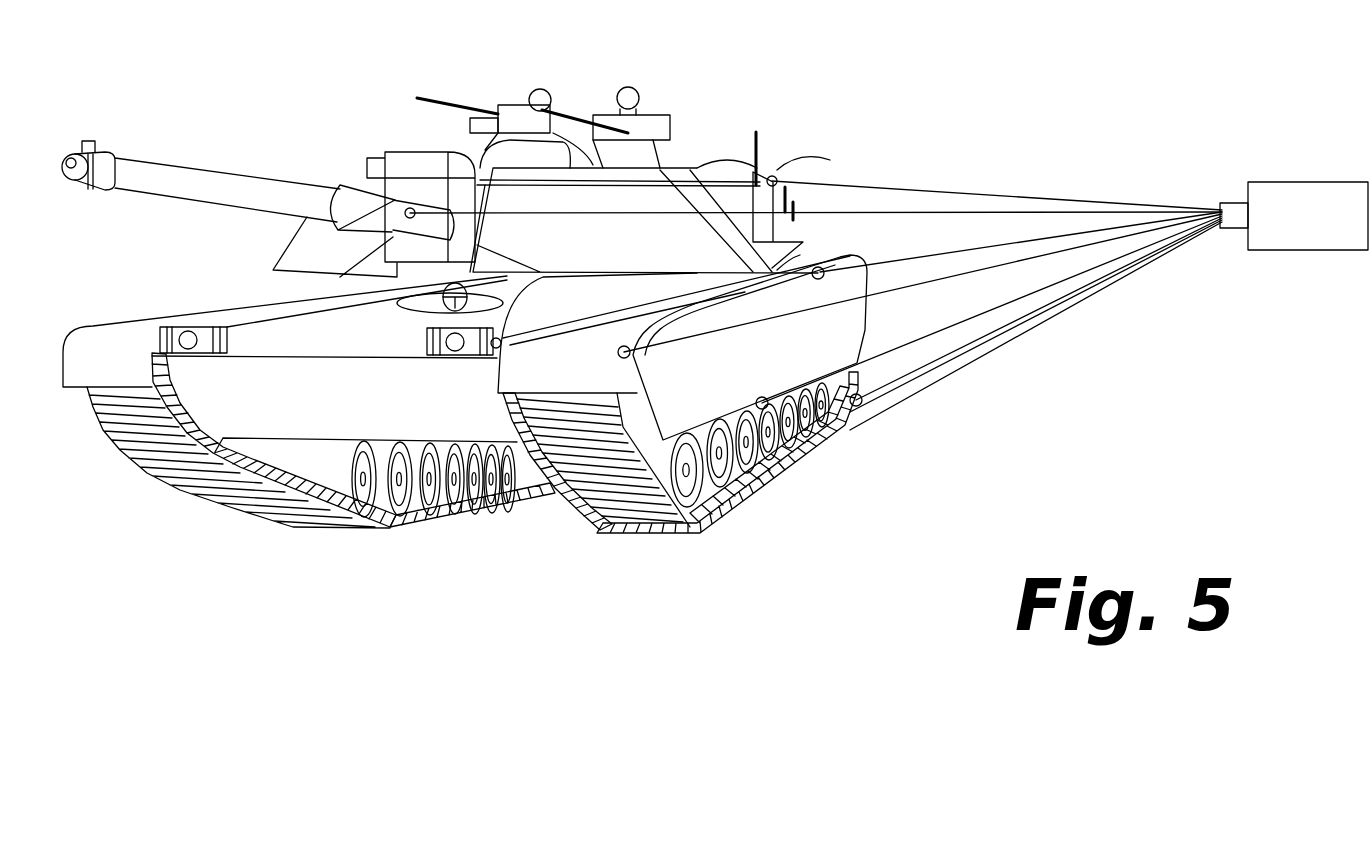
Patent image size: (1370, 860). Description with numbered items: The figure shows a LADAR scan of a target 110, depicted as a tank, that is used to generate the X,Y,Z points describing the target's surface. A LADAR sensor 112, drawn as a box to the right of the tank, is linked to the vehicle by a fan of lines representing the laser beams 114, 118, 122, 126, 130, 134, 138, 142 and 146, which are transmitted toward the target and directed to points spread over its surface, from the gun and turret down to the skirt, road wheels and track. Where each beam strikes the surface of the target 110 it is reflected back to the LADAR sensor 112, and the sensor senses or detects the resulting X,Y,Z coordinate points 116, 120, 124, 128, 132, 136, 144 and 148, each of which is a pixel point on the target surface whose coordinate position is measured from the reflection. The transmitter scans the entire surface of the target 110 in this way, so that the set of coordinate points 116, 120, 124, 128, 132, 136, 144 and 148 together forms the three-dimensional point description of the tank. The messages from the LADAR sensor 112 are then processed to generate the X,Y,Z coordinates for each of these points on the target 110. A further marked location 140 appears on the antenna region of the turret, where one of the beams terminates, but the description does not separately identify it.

The target 110 is at (662, 103).
The LADAR sensor 112 is at (1296, 182).
The laser beam 114 is at (1000, 324).
The X,Y,Z coordinate point 116 is at (860, 420).
The laser beam 118 is at (880, 293).
The X,Y,Z coordinate point 120 is at (640, 370).
The laser beam 122 is at (545, 328).
The X,Y,Z coordinate point 124 is at (505, 320).
The laser beam 126 is at (900, 258).
The X,Y,Z coordinate point 128 is at (820, 266).
The laser beam 130 is at (612, 221).
The X,Y,Z coordinate point 132 is at (308, 218).
The laser beam 134 is at (240, 168).
The X,Y,Z coordinate point 136 is at (72, 140).
The laser beam 138 is at (892, 188).
The reflection point on antenna base 140 is at (777, 180).
The laser beam 142 is at (1030, 295).
The X,Y,Z coordinate point 144 is at (763, 398).
The laser beam 146 is at (945, 378).
The X,Y,Z coordinate point 148 is at (703, 520).